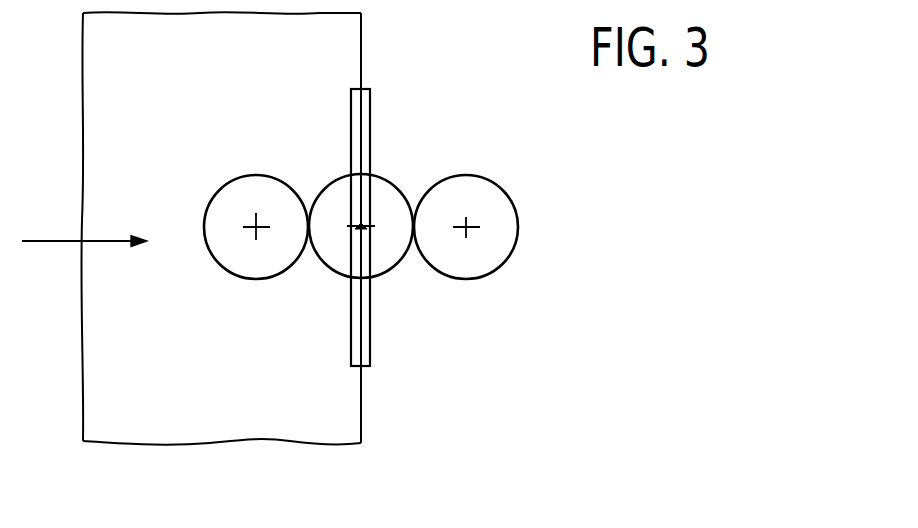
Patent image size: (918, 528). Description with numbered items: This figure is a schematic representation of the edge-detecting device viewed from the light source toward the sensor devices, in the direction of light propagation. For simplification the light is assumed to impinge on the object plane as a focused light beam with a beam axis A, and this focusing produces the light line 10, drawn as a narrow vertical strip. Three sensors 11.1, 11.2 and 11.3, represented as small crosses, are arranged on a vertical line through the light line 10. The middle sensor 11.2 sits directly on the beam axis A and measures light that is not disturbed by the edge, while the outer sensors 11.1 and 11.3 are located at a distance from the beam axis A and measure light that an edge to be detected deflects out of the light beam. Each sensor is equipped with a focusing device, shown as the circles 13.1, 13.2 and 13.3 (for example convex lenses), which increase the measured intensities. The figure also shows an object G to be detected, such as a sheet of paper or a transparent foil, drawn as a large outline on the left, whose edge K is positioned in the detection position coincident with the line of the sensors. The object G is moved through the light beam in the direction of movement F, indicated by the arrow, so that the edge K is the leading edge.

The light line 10 is at (372, 118).
The focusing device 13.1 is at (242, 202).
The focusing device 13.2 is at (335, 197).
The focusing device 13.3 is at (477, 203).
The sensor 11.1 is at (255, 235).
The sensor 11.2 is at (353, 232).
The sensor 11.3 is at (472, 232).
The beam axis A is at (367, 232).
The edge K is at (361, 405).
The object G is at (143, 402).
The direction of movement F is at (50, 241).